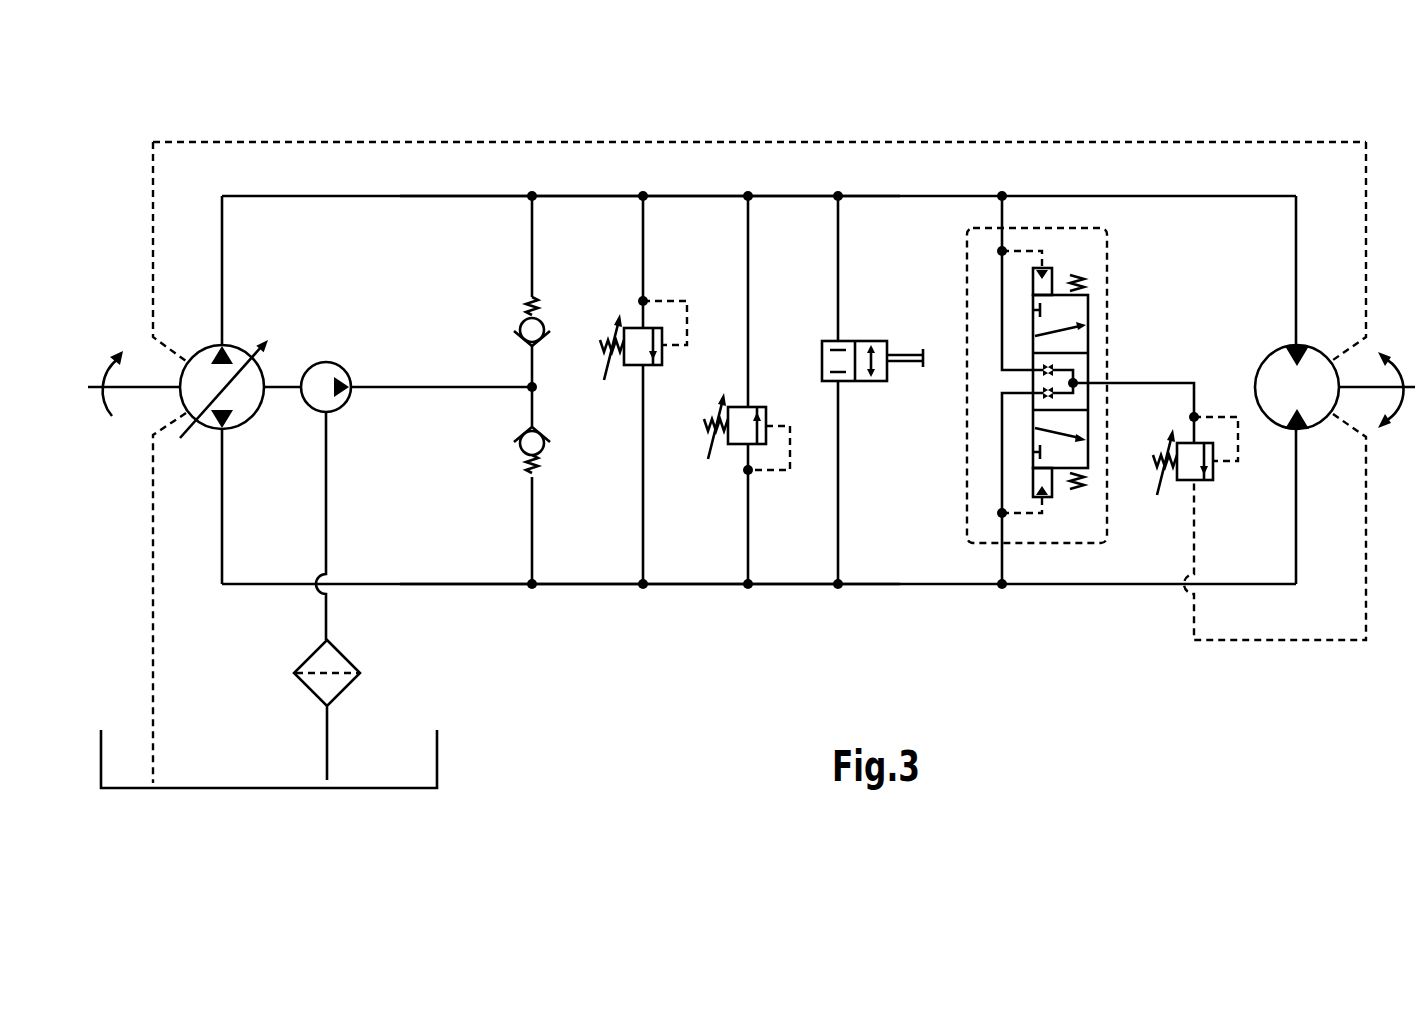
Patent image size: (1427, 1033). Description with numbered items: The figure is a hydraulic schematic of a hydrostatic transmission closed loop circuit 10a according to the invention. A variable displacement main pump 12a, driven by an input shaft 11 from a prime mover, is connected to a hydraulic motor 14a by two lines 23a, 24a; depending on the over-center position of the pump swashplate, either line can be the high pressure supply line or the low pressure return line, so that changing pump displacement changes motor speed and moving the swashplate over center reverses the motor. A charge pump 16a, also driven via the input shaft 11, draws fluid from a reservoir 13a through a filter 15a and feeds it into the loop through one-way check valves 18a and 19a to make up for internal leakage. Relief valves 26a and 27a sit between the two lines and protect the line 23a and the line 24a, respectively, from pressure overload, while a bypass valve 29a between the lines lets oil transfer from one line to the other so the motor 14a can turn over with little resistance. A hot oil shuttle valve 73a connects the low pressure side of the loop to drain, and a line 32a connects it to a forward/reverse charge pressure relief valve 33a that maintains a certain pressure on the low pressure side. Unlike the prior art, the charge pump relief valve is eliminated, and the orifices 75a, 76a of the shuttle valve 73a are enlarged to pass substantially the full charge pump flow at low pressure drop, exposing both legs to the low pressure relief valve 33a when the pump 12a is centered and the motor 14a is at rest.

The hydrostatic transmission closed loop circuit 10a is at (163, 97).
The input shaft 11 is at (88, 389).
The variable displacement main pump 12a is at (185, 370).
The reservoir 13a is at (437, 759).
The hydraulic motor 14a is at (1322, 345).
The filter 15a is at (318, 663).
The charge pump 16a is at (331, 370).
The one-way check valve 18a is at (526, 320).
The one-way check valve 19a is at (541, 451).
The line 23a is at (686, 196).
The line 24a is at (871, 585).
The relief valve 26a is at (636, 327).
The relief valve 27a is at (740, 443).
The bypass valve 29a is at (872, 341).
The line 32a is at (1196, 402).
The forward/reverse charge pressure relief valve 33a is at (1188, 481).
The hot oil shuttle valve 73a is at (1045, 315).
The orifice 75a is at (1050, 368).
The orifice 76a is at (1045, 393).